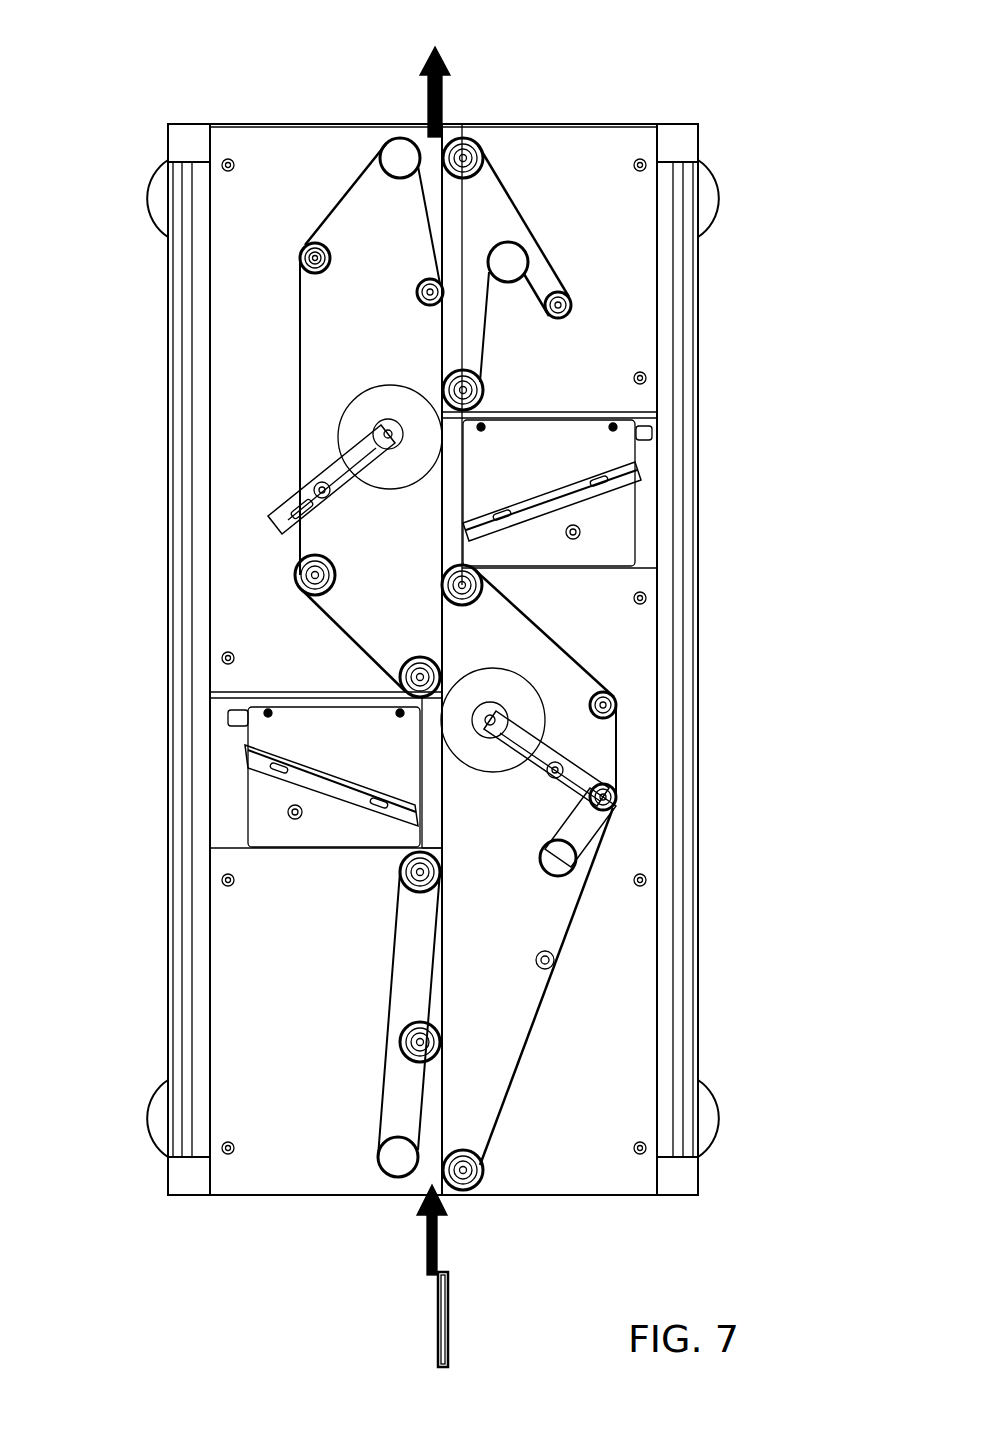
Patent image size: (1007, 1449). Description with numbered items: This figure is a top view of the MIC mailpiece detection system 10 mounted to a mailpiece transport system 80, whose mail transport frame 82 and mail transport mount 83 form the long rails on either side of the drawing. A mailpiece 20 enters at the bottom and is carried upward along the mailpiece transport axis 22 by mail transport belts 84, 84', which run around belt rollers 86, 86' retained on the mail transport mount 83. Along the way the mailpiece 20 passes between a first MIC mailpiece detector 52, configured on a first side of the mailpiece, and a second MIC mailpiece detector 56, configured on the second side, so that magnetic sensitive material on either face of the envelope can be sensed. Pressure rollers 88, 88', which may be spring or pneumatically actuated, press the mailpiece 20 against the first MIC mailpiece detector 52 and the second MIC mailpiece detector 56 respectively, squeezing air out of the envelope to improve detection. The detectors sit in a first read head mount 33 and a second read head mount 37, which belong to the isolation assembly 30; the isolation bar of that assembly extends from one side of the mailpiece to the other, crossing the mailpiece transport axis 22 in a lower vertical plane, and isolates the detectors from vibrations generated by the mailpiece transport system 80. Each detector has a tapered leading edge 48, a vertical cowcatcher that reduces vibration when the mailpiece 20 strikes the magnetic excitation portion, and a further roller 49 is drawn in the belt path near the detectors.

The MIC mailpiece detection system 10 is at (150, 103).
The mailpiece 20 is at (440, 1305).
The mailpiece transport axis 22 is at (438, 1224).
The isolation assembly 30 is at (252, 830).
The first read head mount 33 is at (253, 807).
The second read head mount 37 is at (600, 540).
The tapered leading edge 48 is at (455, 840).
The roller 49 is at (445, 547).
The first MIC mailpiece detector 52 is at (285, 728).
The second MIC mailpiece detector 56 is at (595, 452).
The mailpiece transport system 80 is at (380, 146).
The mail transport frame 82 is at (690, 283).
The mail transport mount 83 is at (255, 912).
The mail transport belt 84 is at (661, 836).
The belt roller 86 is at (695, 727).
The pressure roller 88 is at (602, 739).
The mail transport belt 84' is at (255, 454).
The idler pulley 86' is at (225, 539).
The pressure roller 88' is at (336, 412).